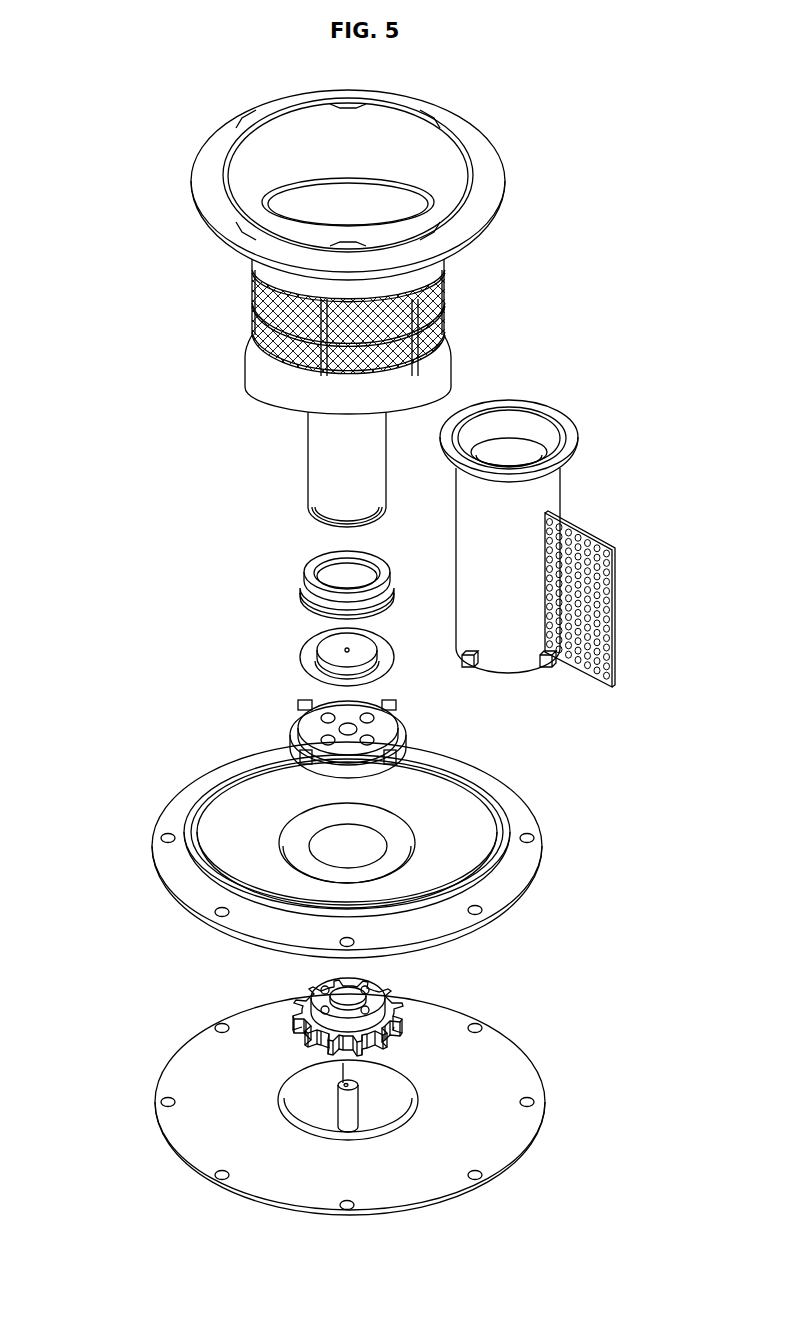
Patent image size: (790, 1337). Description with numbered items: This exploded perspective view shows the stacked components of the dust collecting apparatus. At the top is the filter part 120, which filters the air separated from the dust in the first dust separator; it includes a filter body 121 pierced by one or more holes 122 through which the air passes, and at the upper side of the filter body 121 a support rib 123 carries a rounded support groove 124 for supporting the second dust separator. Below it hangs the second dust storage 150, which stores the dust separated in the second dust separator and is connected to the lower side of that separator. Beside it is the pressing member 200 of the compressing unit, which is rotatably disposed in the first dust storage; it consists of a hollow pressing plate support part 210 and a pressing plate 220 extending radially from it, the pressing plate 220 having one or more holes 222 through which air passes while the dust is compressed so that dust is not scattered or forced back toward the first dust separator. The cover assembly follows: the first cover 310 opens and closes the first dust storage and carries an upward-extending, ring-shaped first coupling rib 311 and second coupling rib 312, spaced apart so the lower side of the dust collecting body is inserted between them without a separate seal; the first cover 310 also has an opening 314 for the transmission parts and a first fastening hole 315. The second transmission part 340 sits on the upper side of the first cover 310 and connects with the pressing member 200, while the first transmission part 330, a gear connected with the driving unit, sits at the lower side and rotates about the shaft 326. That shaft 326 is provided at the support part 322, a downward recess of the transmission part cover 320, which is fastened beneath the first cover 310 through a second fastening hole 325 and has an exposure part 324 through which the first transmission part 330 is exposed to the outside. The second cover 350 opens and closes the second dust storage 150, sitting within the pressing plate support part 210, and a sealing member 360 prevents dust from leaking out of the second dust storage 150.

The filter part 120 is at (465, 265).
The filter body 121 is at (252, 298).
The holes 122 is at (252, 331).
The support rib 123 is at (393, 105).
The rounded support groove 124 is at (432, 126).
The second dust storage 150 is at (297, 456).
The pressing member 200 is at (594, 398).
The pressing plate support part 210 is at (558, 490).
The pressing plate 220 is at (614, 606).
The holes 222 is at (612, 580).
The first cover 310 is at (535, 824).
The first coupling rib 311 is at (430, 768).
The second coupling rib 312 is at (468, 766).
The opening 314 is at (338, 847).
The first fastening hole 315 is at (478, 910).
The transmission part cover 320 is at (527, 1082).
The support part 322 is at (303, 1113).
The exposure part 324 is at (388, 1093).
The second fastening hole 325 is at (478, 1172).
The shaft 326 is at (347, 1108).
The first transmission part 330 is at (280, 1010).
The second transmission part 340 is at (288, 718).
The second cover 350 is at (297, 652).
The sealing member 360 is at (297, 577).